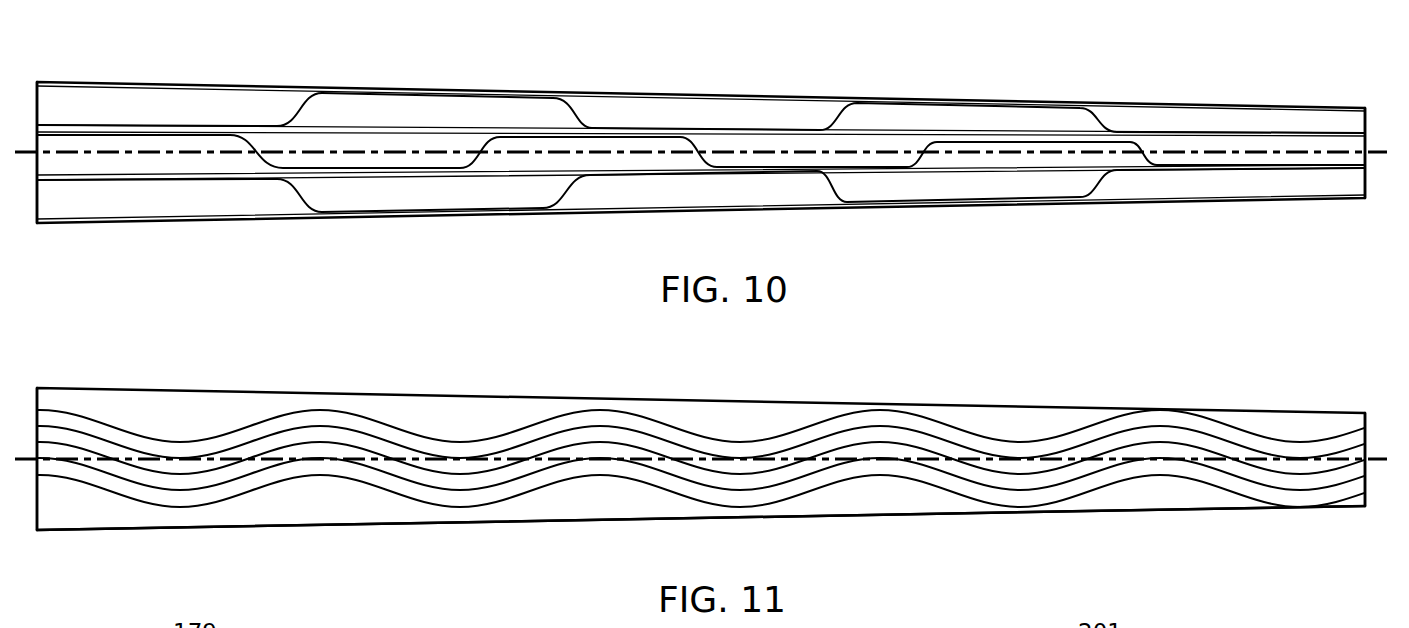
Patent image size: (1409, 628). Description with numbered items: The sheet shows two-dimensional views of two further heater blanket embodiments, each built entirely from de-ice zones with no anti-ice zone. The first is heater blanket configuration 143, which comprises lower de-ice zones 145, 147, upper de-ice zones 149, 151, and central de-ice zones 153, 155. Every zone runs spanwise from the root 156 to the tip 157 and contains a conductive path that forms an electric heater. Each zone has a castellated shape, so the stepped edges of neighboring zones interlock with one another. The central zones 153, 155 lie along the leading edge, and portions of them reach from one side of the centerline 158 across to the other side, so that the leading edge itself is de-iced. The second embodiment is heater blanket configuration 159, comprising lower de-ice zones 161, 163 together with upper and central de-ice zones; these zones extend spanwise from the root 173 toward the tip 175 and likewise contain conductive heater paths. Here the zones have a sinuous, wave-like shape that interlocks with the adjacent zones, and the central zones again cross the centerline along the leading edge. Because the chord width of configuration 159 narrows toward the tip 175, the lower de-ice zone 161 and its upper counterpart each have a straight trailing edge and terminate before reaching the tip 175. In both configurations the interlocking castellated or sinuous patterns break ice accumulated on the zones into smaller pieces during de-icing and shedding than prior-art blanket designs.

In FIG. 10, the heater blanket configuration 143 is at (210, 74).
In FIG. 10, the lower de-ice zone 145 is at (672, 205).
In FIG. 10, the lower de-ice zone 147 is at (467, 190).
In FIG. 10, the upper de-ice zone 149 is at (752, 108).
In FIG. 10, the upper de-ice zone 151 is at (357, 112).
In FIG. 10, the central de-ice zone 153 is at (571, 160).
In FIG. 10, the central de-ice zone 155 is at (460, 140).
In FIG. 10, the root 156 is at (37, 213).
In FIG. 10, the tip 157 is at (1366, 180).
In FIG. 10, the centerline 158 is at (185, 153).
In FIG. 11, the heater blanket configuration 159 is at (210, 380).
In FIG. 11, the lower de-ice zone 161 is at (318, 512).
In FIG. 11, the lower de-ice zone 163 is at (775, 493).
In FIG. 11, the root 173 is at (37, 520).
In FIG. 11, the tip 175 is at (1366, 488).